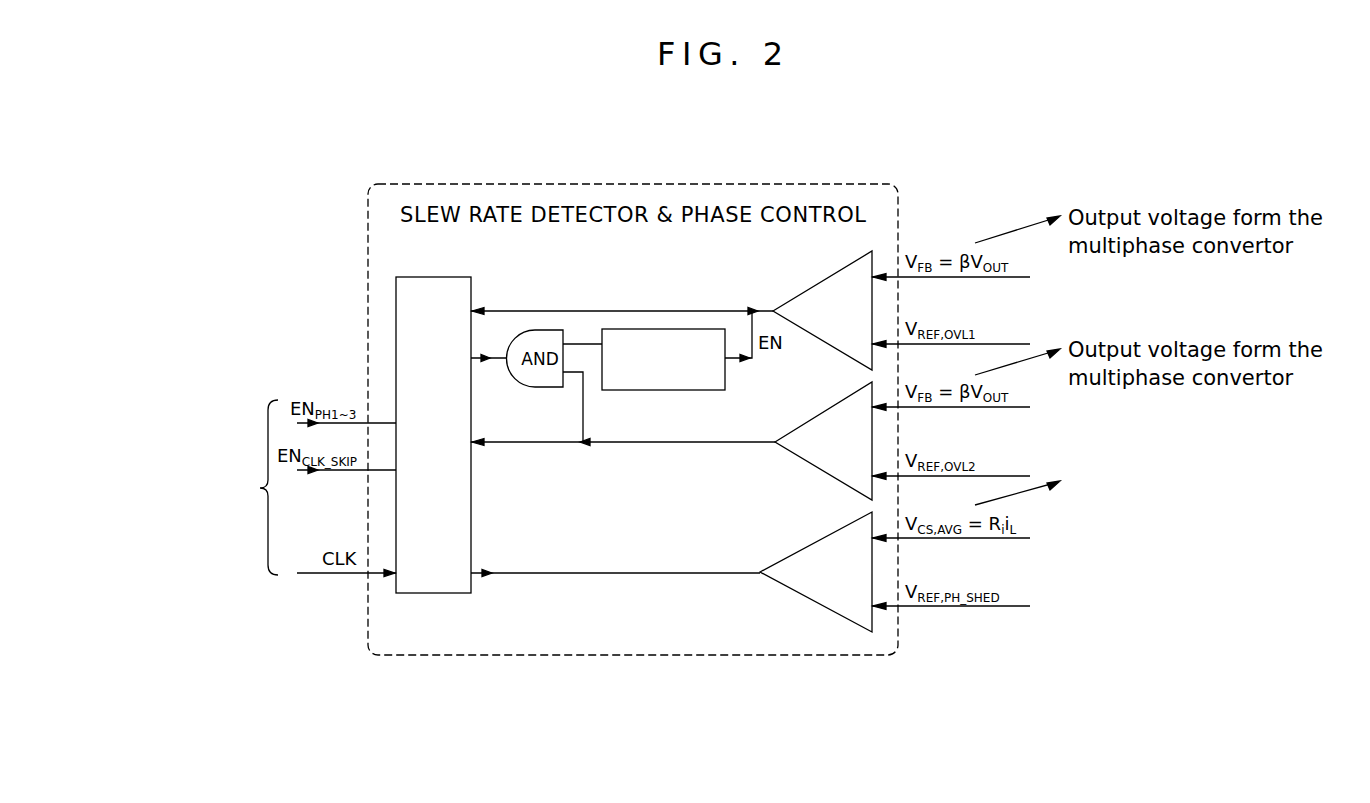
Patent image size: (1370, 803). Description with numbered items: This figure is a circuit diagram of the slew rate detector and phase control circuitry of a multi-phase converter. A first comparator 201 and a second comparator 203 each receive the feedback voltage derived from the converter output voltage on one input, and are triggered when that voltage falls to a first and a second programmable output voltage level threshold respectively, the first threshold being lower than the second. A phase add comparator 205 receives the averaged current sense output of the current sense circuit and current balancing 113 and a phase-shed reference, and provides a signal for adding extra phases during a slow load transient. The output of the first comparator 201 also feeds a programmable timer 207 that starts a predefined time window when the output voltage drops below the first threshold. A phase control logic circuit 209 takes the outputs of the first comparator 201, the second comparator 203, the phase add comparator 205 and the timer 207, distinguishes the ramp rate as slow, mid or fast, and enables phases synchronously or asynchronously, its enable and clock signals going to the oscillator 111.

The first comparator 201 is at (808, 290).
The second comparator 203 is at (805, 420).
The phase add comparator 205 is at (805, 548).
The timer 207 is at (663, 390).
The phase control logic circuit 209 is at (438, 277).
The oscillator 111 is at (201, 487).
The current sense circuit and current balancing 113 is at (1109, 486).